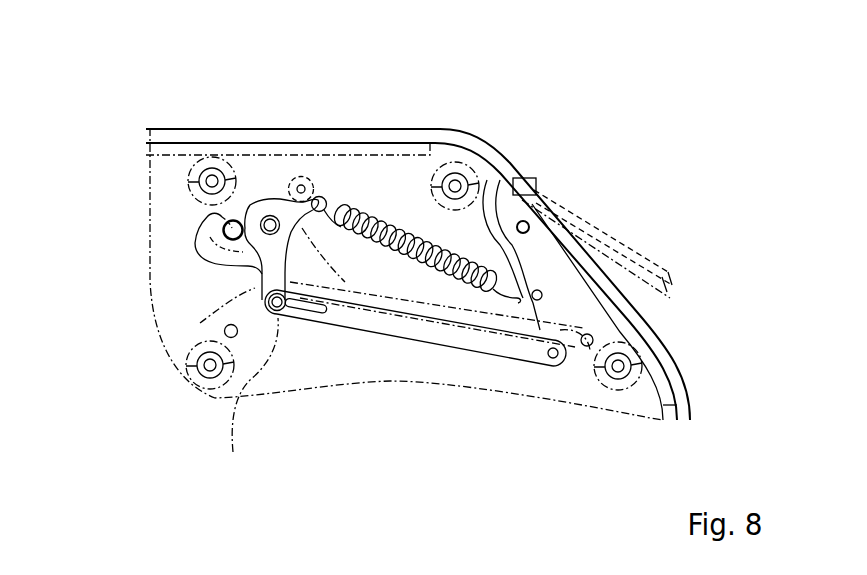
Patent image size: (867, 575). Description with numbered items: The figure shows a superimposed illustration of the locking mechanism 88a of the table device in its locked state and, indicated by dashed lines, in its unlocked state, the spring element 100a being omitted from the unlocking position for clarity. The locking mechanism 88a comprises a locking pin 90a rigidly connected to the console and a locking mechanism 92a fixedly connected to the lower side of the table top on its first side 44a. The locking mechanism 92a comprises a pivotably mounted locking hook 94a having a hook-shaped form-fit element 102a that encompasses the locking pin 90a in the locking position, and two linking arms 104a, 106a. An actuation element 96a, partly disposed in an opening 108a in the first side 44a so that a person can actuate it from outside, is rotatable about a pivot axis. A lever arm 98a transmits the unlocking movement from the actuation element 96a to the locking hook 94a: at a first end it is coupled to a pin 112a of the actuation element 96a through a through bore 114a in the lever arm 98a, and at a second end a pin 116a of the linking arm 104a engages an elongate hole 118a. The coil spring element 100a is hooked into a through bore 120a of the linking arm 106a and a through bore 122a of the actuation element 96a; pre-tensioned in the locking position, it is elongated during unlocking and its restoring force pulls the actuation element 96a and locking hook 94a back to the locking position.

The locking mechanism 88a is at (398, 100).
The locking pin 90a is at (236, 219).
The linking arm 106a is at (284, 202).
The through bore 120a is at (321, 190).
The spring element 100a is at (415, 246).
The through bore 122a is at (492, 185).
The pin 116a is at (566, 285).
The actuation element 96a is at (570, 282).
The opening 108a is at (663, 309).
The first side 44a is at (697, 389).
The form-fit element 102a is at (208, 226).
The locking hook 94a is at (258, 290).
The linking arm 104a is at (200, 323).
The elongate hole 118a is at (279, 320).
The lever arm 98a is at (371, 332).
The locking mechanism 92a is at (459, 376).
The through bore 114a is at (513, 354).
The pin 112a is at (557, 367).